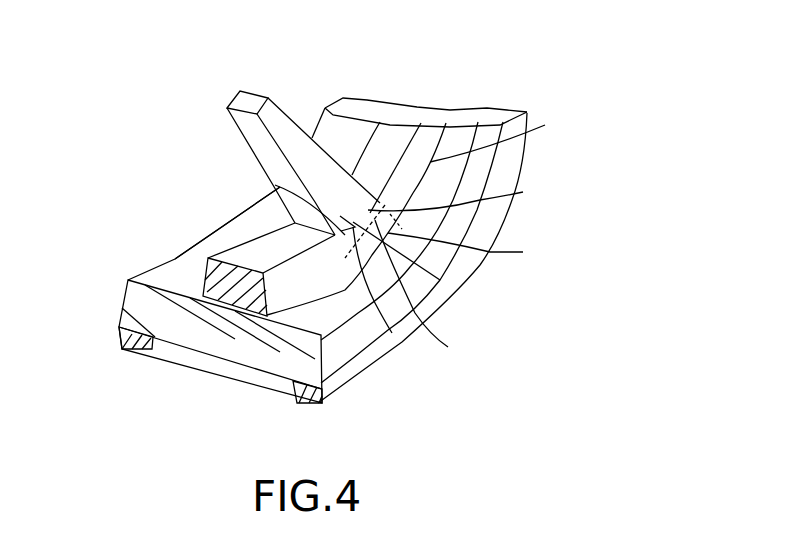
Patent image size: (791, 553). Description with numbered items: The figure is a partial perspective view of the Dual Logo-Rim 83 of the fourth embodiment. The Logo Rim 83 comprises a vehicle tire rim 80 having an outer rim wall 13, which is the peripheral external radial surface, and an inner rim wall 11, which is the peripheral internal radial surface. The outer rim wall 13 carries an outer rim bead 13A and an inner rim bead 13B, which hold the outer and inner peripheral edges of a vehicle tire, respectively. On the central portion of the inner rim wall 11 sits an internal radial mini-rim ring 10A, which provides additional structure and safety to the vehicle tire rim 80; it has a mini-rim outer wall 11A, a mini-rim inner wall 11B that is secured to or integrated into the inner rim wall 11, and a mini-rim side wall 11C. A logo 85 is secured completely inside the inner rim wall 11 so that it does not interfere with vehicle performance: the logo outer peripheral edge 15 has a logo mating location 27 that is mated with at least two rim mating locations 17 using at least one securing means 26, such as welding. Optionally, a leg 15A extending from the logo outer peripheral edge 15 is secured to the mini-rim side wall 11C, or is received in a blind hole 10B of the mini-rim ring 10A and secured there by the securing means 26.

The Dual Logo-Rim 83 is at (216, 66).
The logo 85 is at (285, 122).
The inner rim wall 11 is at (163, 272).
The mini-rim outer wall 11A is at (392, 130).
The mini-rim inner wall 11B is at (226, 303).
The mini-rim side wall 11C is at (545, 125).
The internal radial mini-rim ring 10A is at (429, 134).
The blind hole 10B is at (523, 252).
The logo mating location 27 is at (461, 194).
The rim mating location 17 is at (440, 280).
The logo outer peripheral edge 15 is at (273, 185).
The leg 15A is at (448, 347).
The securing means 26 is at (392, 333).
The outer rim wall 13 is at (196, 350).
The outer rim bead 13A is at (312, 400).
The inner rim bead 13B is at (131, 350).
The vehicle tire rim 80 is at (233, 346).